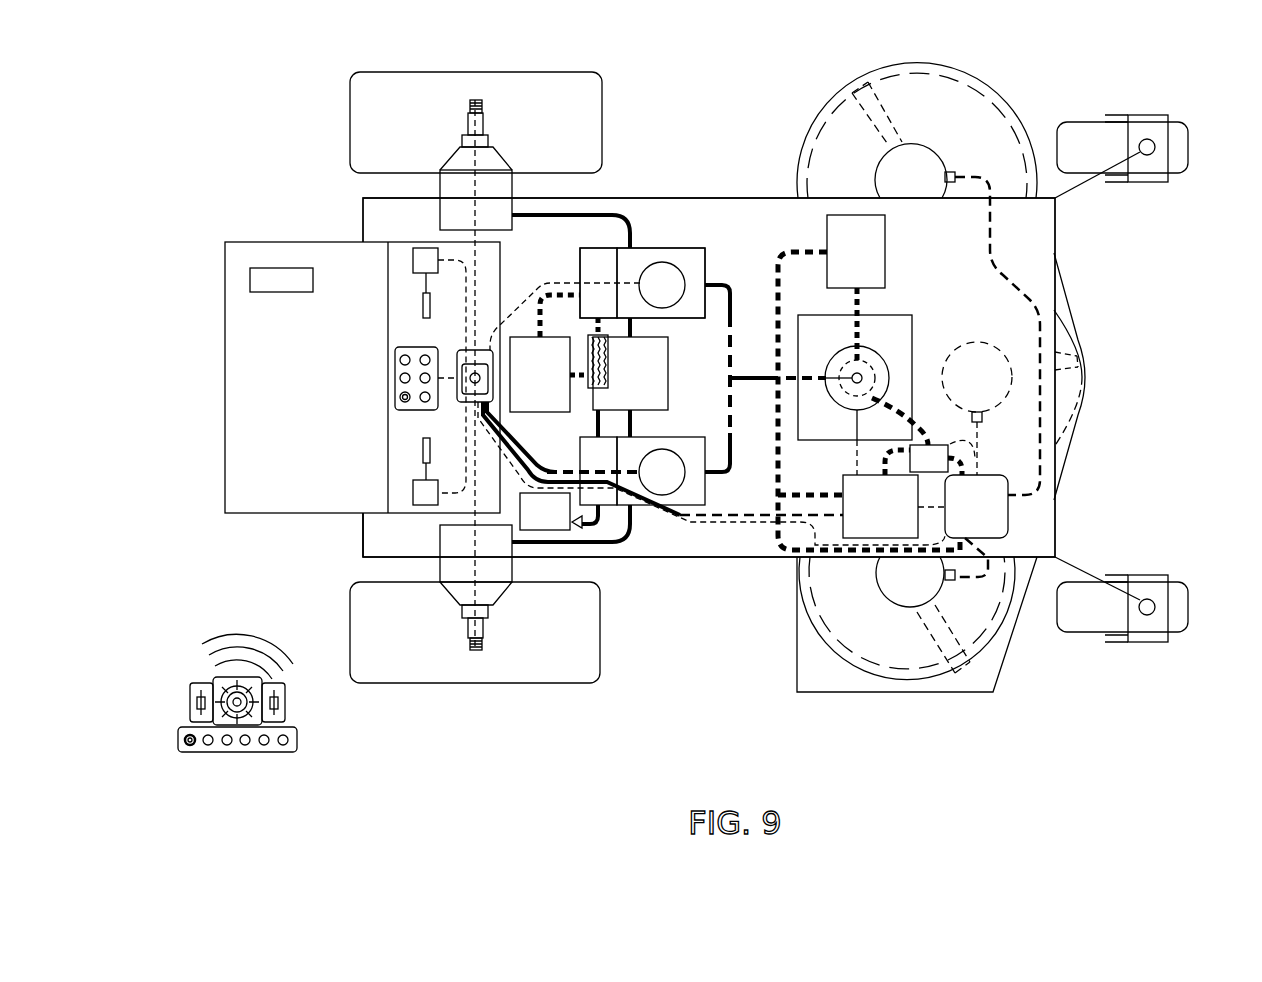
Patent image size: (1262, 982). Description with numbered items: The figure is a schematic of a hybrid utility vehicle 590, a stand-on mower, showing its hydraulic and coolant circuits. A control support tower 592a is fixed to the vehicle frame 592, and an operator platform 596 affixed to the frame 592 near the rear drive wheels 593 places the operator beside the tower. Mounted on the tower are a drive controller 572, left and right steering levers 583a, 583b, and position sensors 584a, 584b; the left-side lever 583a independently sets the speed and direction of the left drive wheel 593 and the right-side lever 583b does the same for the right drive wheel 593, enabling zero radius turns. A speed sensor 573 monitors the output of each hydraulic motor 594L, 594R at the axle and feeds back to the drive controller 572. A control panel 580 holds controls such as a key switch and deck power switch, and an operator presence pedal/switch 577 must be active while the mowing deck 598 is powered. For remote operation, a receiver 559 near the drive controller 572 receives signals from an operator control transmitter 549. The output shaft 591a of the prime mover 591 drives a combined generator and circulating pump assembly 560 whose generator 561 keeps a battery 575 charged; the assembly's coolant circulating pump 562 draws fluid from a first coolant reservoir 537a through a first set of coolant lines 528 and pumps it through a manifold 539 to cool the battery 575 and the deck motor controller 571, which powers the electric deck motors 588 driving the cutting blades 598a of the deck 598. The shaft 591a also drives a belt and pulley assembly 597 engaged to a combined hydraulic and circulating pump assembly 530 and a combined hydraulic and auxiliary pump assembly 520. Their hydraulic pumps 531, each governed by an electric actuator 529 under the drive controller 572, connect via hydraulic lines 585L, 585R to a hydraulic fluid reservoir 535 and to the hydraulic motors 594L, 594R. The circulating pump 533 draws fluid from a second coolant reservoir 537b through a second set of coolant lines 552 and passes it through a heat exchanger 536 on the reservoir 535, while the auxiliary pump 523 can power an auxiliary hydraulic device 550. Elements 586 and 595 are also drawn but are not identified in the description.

The hybrid utility vehicle 590 is at (203, 91).
The vehicle frame 592 is at (710, 198).
The control support tower 592a is at (365, 513).
The operator platform 596 is at (362, 377).
The operator presence pedal/switch 577 is at (280, 268).
The rear drive wheel 593 is at (477, 72).
The hydraulic motor 594L is at (452, 208).
The hydraulic motor 594R is at (455, 546).
The speed sensor 573 is at (490, 134).
The hydraulic line 585L is at (622, 215).
The hydraulic line 585R is at (618, 545).
The power take-off line 586 is at (598, 530).
The auxiliary hydraulic device 550 is at (545, 511).
The combined hydraulic and circulating pump assembly 530 is at (650, 231).
The circulating pump 533 is at (580, 268).
The auxiliary pump 523 is at (580, 458).
The hydraulic pump 531 is at (660, 318).
The electric actuator 529 is at (680, 276).
The combined hydraulic and auxiliary pump assembly 520 is at (650, 526).
The belt and pulley assembly 597 is at (740, 380).
The second coolant fluid reservoir 537b is at (549, 374).
The heat exchanger 536 is at (608, 364).
The hydraulic fluid reservoir 535 is at (630, 377).
The first coolant reservoir 537a is at (856, 290).
The second set of coolant lines 552 is at (532, 303).
The first set of coolant lines 528 is at (780, 258).
The prime mover 591 is at (855, 377).
The generator 561 is at (843, 358).
The combined generator and circulating pump assembly 560 is at (895, 363).
The output shaft 591a is at (855, 385).
The coolant circulating pump 562 is at (866, 395).
The manifold 539 is at (935, 445).
The electric deck motor 588 is at (938, 158).
The battery 575 is at (894, 506).
The deck motor controller 571 is at (976, 506).
The mowing deck 598 is at (912, 62).
The rotatable cutting blade 598a is at (888, 112).
The outrigger 595 is at (1190, 150).
The drive controller 572 is at (460, 350).
The receiver 559 is at (470, 400).
The control panel 580 is at (395, 378).
The position sensor 584a is at (413, 260).
The left-side control lever 583a is at (423, 305).
The right-side control lever 583b is at (423, 450).
The position sensor 584b is at (413, 493).
The operator control transmitter 549 is at (322, 753).